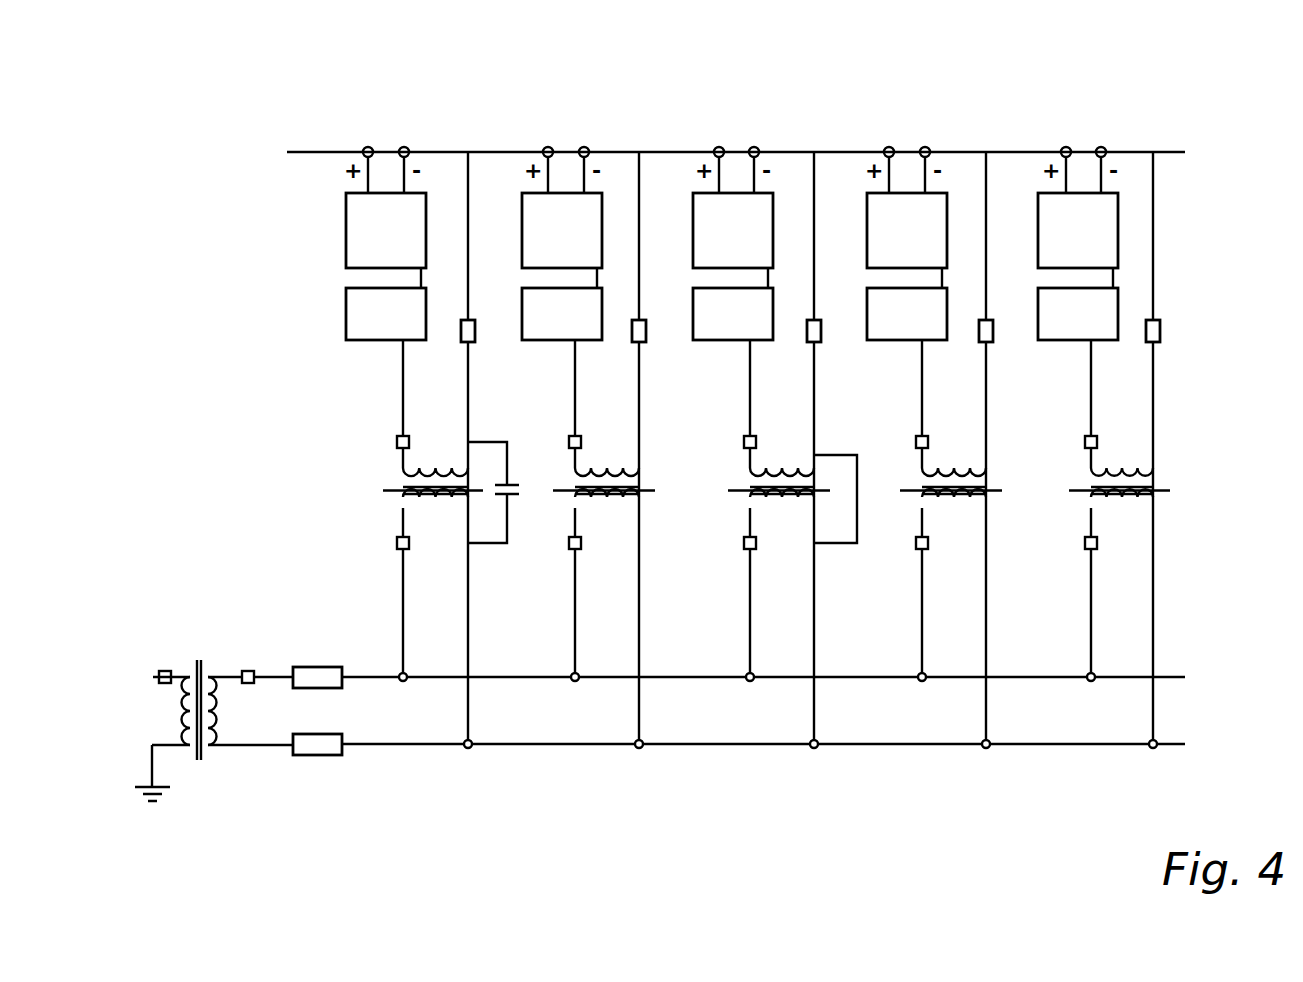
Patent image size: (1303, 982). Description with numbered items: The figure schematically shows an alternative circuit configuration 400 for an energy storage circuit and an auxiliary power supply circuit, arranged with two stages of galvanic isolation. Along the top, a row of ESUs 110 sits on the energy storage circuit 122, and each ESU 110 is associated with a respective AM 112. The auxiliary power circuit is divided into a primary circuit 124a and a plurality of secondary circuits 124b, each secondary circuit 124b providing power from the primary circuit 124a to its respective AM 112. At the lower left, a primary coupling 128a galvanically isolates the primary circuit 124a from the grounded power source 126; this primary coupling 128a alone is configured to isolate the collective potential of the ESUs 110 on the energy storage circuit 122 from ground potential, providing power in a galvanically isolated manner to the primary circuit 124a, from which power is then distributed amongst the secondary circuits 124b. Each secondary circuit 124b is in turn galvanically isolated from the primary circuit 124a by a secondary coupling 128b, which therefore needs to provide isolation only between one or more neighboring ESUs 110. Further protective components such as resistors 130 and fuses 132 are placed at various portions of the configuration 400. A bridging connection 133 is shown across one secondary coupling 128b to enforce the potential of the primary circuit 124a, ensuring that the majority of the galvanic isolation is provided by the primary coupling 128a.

The circuit configuration 400 is at (212, 82).
The ESU 110 is at (1100, 244).
The AM 112 is at (1100, 328).
The energy storage circuit 122 is at (318, 152).
The primary circuit 124a is at (553, 748).
The secondary circuit 124b is at (398, 368).
The grounded power source 126 is at (150, 760).
The primary coupling 128a is at (200, 640).
The secondary coupling 128b is at (362, 493).
The resistor 130 is at (476, 334).
The fuse 132 is at (397, 442).
The bridging connection 133 is at (857, 483).